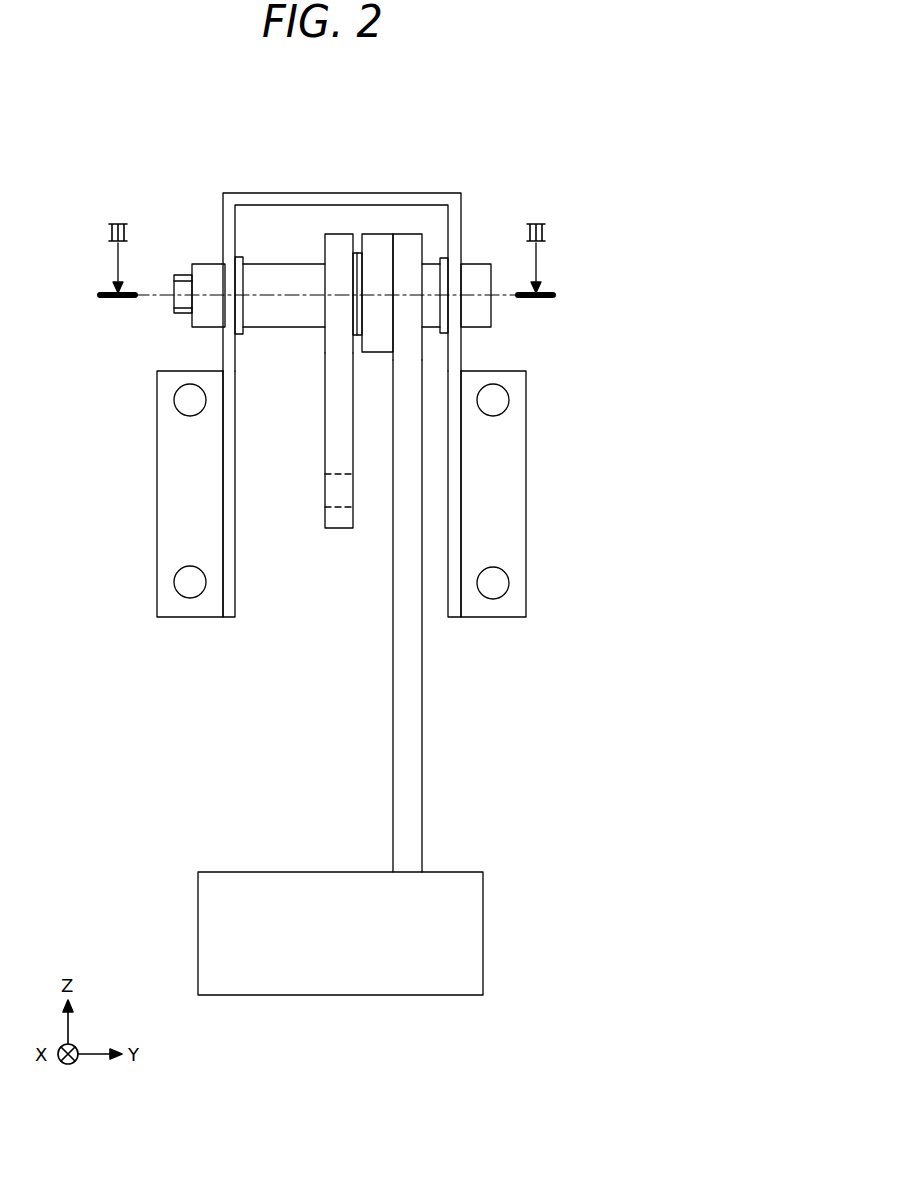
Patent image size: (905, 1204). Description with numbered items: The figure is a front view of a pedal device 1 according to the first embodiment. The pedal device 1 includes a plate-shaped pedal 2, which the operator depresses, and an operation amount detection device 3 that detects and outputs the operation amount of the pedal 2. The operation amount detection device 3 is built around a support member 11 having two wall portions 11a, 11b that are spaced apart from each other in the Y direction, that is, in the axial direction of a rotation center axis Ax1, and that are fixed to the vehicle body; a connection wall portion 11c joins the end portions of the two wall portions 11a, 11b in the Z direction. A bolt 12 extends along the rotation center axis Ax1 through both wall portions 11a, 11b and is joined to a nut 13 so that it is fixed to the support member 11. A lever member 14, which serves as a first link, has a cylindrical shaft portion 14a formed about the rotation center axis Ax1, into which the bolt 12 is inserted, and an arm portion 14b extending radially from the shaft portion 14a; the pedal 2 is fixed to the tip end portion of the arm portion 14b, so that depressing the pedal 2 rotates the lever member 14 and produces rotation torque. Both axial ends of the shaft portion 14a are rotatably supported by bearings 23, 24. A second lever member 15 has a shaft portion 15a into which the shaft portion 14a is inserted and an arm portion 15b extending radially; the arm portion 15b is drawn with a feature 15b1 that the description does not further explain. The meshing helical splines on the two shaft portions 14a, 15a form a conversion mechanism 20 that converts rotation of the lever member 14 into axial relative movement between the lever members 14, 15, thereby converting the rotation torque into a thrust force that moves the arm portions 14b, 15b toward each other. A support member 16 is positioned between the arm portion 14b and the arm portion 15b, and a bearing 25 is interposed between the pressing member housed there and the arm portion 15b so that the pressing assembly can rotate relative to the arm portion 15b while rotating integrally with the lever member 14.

The pedal device 1 is at (580, 103).
The pedal 2 is at (433, 982).
The operation amount detection device 3 is at (494, 160).
The support member 11 is at (341, 413).
The wall portion 11a is at (229, 618).
The wall portion 11b is at (452, 618).
The connection wall portion 11c is at (320, 193).
The bolt 12 is at (475, 264).
The nut 13 is at (205, 264).
The lever member 14 is at (470, 506).
The shaft portion 14a is at (437, 264).
The arm portion 14b is at (422, 782).
The lever member 15 is at (324, 416).
The shaft portion 15a is at (270, 264).
The arm portion 15b is at (310, 440).
The engaging hole 15b1 is at (335, 474).
The support member 16 is at (380, 234).
The conversion mechanism 20 is at (313, 337).
The bearing 23 is at (238, 257).
The bearing 24 is at (449, 334).
The bearing 25 is at (357, 252).
The rotation center axis Ax1 is at (140, 299).